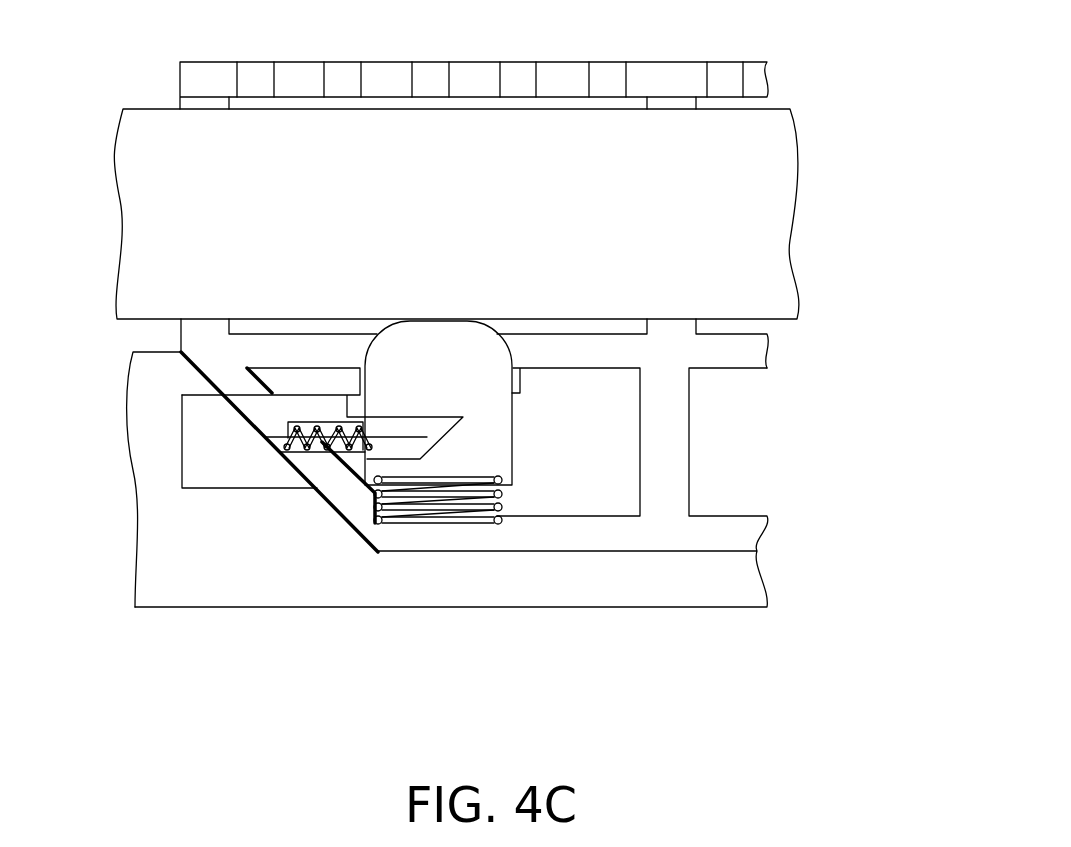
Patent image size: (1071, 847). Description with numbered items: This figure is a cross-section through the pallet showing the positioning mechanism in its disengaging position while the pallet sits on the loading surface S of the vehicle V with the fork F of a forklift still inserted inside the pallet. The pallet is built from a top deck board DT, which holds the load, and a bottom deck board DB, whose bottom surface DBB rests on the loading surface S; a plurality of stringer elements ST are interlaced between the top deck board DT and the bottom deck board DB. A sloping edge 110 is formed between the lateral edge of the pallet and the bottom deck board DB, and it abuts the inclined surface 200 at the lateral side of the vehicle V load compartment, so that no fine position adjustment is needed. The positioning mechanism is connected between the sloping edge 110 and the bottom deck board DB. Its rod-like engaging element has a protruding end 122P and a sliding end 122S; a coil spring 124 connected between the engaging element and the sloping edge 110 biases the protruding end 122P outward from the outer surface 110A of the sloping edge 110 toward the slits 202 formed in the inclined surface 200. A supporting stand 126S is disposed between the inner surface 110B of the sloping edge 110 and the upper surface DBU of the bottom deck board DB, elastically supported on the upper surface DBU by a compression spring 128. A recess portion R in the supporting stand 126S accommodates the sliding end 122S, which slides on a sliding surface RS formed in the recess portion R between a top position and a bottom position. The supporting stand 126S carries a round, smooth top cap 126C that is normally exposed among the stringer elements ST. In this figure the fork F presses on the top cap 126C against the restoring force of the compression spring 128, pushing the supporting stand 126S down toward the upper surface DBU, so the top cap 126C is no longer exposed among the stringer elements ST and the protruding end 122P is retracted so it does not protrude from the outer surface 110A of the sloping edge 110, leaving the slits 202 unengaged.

The sloping edge 110 is at (205, 496).
The outer surface of the sloping edge 110A is at (297, 468).
The inner surface of the sloping edge 110B is at (349, 467).
The protruding end 122P is at (263, 415).
The sliding end 122S is at (427, 425).
The coil spring 124 is at (352, 505).
The top cap 126C is at (438, 320).
The supporting stand 126S is at (487, 392).
The compression spring 128 is at (437, 507).
The inclined surface 200 is at (367, 532).
The slits 202 is at (205, 480).
The bottom deck board DB is at (498, 540).
The bottom surface of the bottom deck board DBB is at (652, 552).
The upper surface of the bottom deck board DBU is at (608, 515).
The top deck board DT is at (566, 80).
The fork F is at (733, 255).
The recess portion R is at (428, 448).
The sliding surface RS is at (383, 448).
The loading surface S is at (713, 550).
The stringer elements ST is at (580, 352).
The vehicle V is at (165, 550).